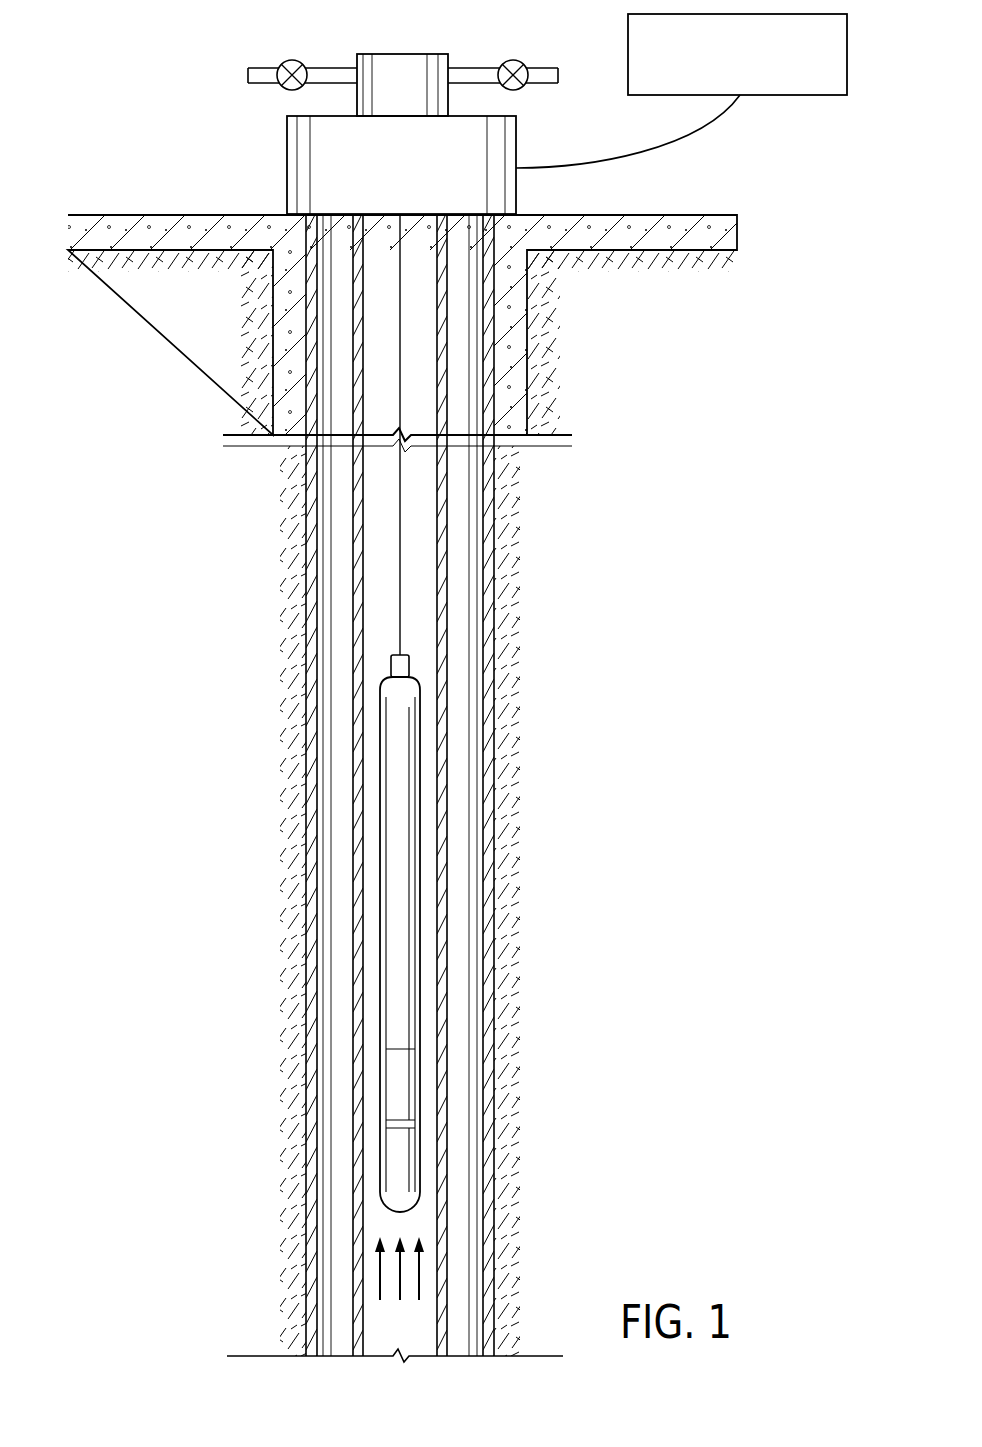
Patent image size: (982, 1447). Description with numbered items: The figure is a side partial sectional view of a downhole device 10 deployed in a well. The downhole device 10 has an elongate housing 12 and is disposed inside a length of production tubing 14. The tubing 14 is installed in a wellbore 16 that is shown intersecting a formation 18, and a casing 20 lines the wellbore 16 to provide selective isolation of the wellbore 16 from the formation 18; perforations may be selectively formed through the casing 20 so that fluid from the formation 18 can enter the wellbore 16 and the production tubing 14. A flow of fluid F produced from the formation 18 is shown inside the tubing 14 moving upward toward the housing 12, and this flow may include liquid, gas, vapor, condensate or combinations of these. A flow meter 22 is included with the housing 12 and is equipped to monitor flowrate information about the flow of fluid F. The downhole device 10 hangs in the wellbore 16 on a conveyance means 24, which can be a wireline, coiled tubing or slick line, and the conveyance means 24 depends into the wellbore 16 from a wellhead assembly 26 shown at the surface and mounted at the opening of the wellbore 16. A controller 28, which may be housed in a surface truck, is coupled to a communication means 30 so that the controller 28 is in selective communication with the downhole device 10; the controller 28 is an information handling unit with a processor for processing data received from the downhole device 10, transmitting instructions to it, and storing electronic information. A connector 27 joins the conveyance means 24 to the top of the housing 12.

The downhole device 10 is at (401, 911).
The elongate housing 12 is at (421, 746).
The production tubing 14 is at (352, 764).
The wellbore 16 is at (468, 853).
The formation 18 is at (509, 940).
The casing 20 is at (308, 946).
The flow meter 22 is at (456, 1116).
The conveyance means 24 is at (401, 544).
The wellhead assembly 26 is at (271, 149).
The cable head 27 is at (390, 661).
The controller 28 is at (830, 112).
The communication means 30 is at (697, 137).
The flow of fluid F is at (378, 1263).